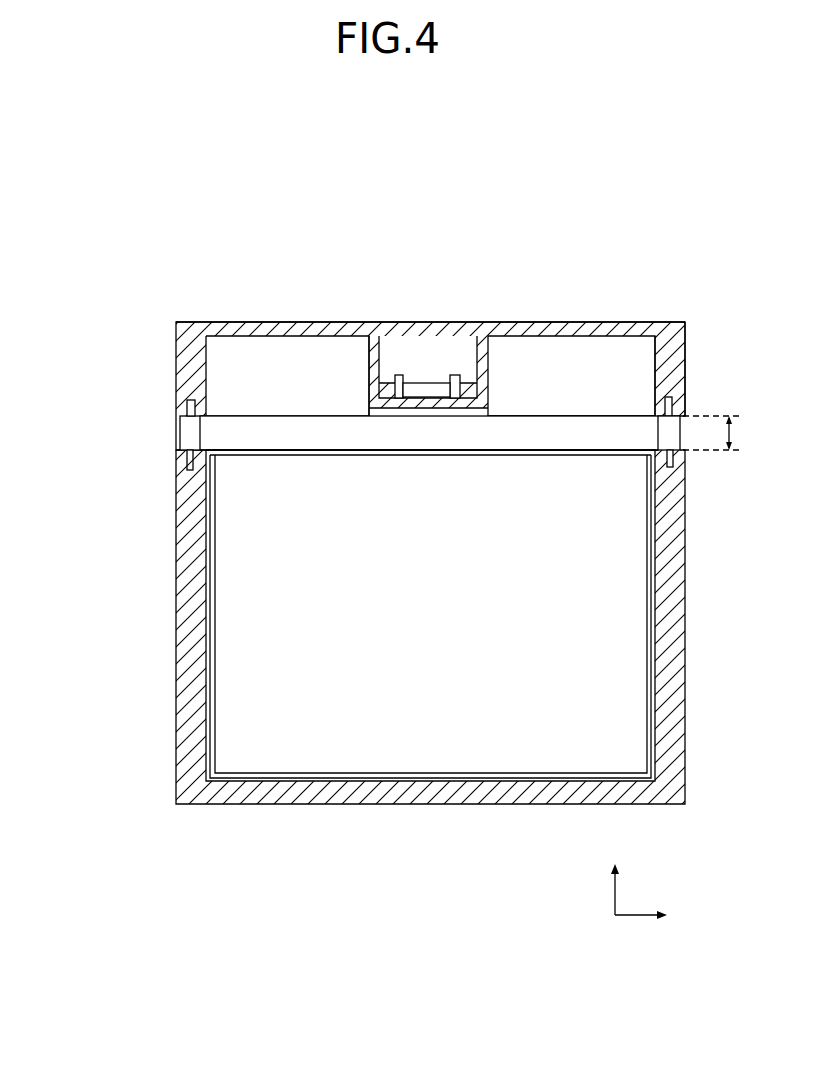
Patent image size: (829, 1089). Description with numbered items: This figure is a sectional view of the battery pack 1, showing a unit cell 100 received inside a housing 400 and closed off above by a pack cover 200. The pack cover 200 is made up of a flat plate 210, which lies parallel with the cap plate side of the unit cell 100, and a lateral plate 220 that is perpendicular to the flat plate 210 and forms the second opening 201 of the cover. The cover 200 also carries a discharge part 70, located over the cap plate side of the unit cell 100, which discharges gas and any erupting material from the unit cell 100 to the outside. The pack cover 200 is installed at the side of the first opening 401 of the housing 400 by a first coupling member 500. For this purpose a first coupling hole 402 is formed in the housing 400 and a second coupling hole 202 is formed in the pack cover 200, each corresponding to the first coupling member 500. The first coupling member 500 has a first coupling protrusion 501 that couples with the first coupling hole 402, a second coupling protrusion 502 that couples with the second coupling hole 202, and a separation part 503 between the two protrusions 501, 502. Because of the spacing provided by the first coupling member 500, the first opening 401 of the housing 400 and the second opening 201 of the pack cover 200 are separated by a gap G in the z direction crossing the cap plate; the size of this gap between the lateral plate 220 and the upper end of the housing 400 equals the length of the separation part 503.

The battery module 1 is at (434, 205).
The discharge part 70 is at (358, 384).
The unit cell 100 is at (452, 613).
The pack cover 200 is at (414, 544).
The second opening 201 is at (563, 416).
The second coupling hole 202 is at (664, 403).
The flat plate 210 is at (518, 329).
The lateral plate 220 is at (668, 362).
The housing 400 is at (672, 651).
The first opening 401 is at (293, 452).
The first coupling hole 402 is at (668, 468).
The first coupling member 500 is at (86, 397).
The first coupling protrusion 501 is at (187, 463).
The second coupling protrusion 502 is at (186, 403).
The separation part 503 is at (187, 436).